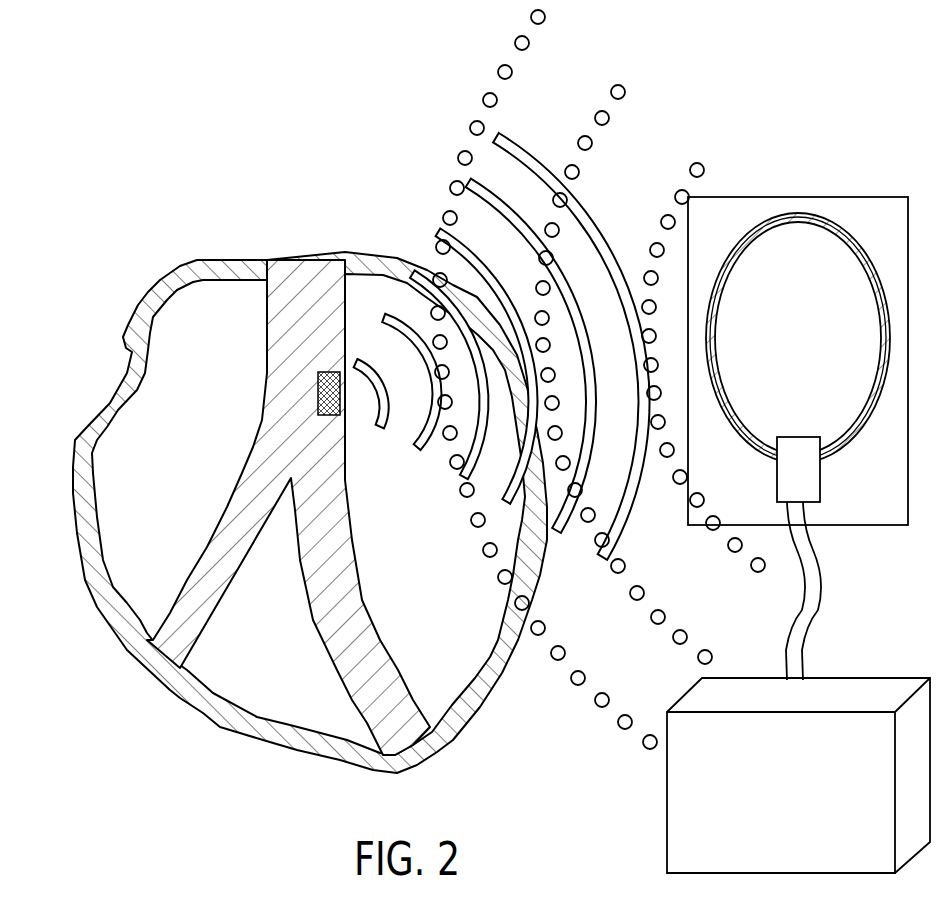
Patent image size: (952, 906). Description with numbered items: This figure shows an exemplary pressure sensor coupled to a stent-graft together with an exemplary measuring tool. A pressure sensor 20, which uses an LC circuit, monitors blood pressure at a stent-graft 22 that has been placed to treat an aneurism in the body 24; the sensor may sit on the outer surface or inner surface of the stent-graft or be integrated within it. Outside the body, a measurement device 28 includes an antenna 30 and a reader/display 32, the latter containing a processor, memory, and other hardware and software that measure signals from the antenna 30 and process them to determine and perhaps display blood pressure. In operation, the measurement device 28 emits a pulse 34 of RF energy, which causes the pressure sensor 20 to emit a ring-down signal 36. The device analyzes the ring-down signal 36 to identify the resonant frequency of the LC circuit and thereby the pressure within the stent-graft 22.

The pressure sensor 20 is at (318, 400).
The stent-graft 22 is at (293, 280).
The body 24 is at (167, 290).
The measurement device 28 is at (892, 433).
The antenna 30 is at (805, 216).
The reader/display 32 is at (883, 687).
The pulse 34 is at (463, 152).
The ring-down signal 36 is at (533, 152).